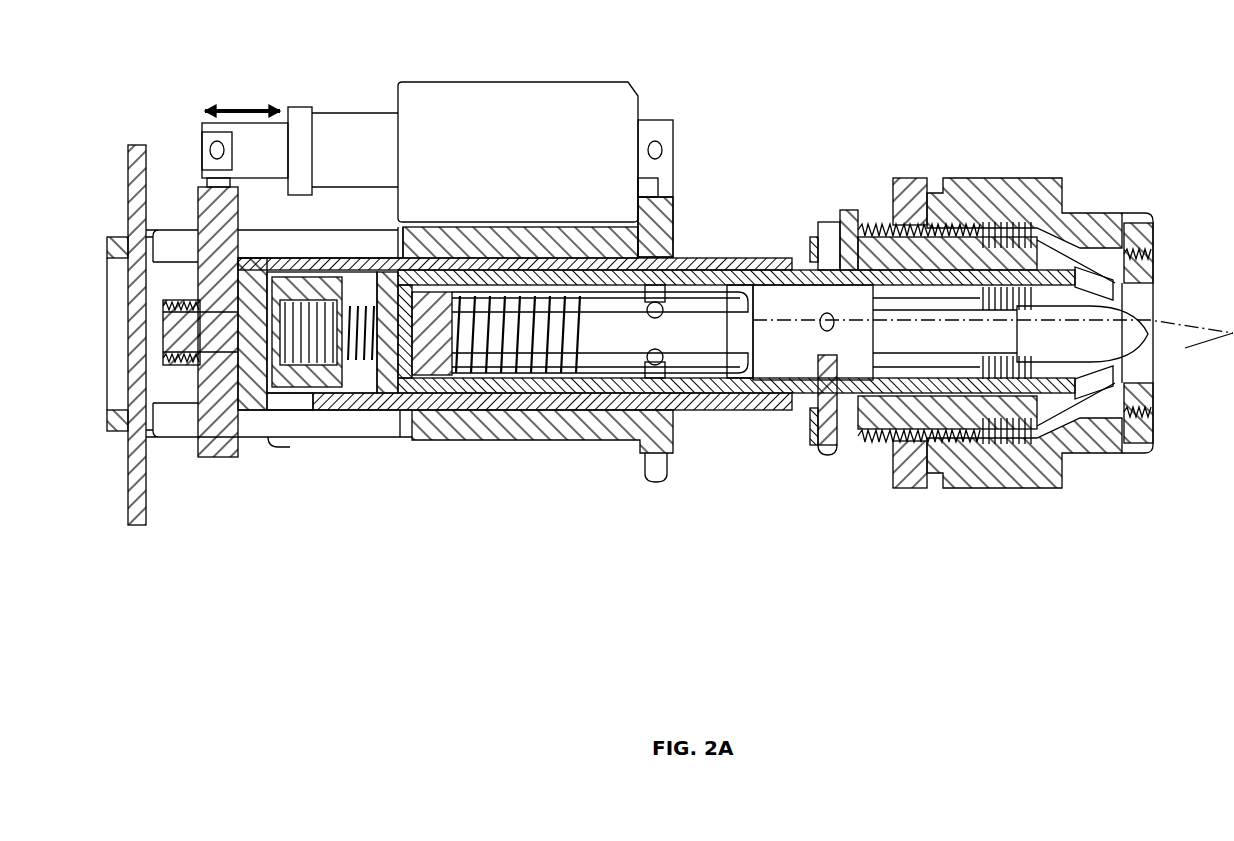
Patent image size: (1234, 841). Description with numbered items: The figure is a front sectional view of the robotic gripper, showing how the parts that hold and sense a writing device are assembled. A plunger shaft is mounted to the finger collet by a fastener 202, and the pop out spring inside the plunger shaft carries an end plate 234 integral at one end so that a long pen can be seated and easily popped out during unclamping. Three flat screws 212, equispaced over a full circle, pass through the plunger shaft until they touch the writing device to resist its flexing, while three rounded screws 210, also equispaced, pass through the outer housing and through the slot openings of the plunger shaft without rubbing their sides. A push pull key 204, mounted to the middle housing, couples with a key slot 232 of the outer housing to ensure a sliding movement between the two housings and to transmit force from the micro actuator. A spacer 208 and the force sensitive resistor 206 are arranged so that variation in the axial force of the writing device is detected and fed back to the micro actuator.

The fastener 202 is at (178, 365).
The push pull key 204 is at (225, 457).
The force sensitive resistor 206 is at (280, 447).
The spacer 208 is at (398, 437).
The rounded screw 210 is at (655, 482).
The flat screw 212 is at (832, 455).
The key slot 232 is at (265, 247).
The end plate 234 is at (578, 290).